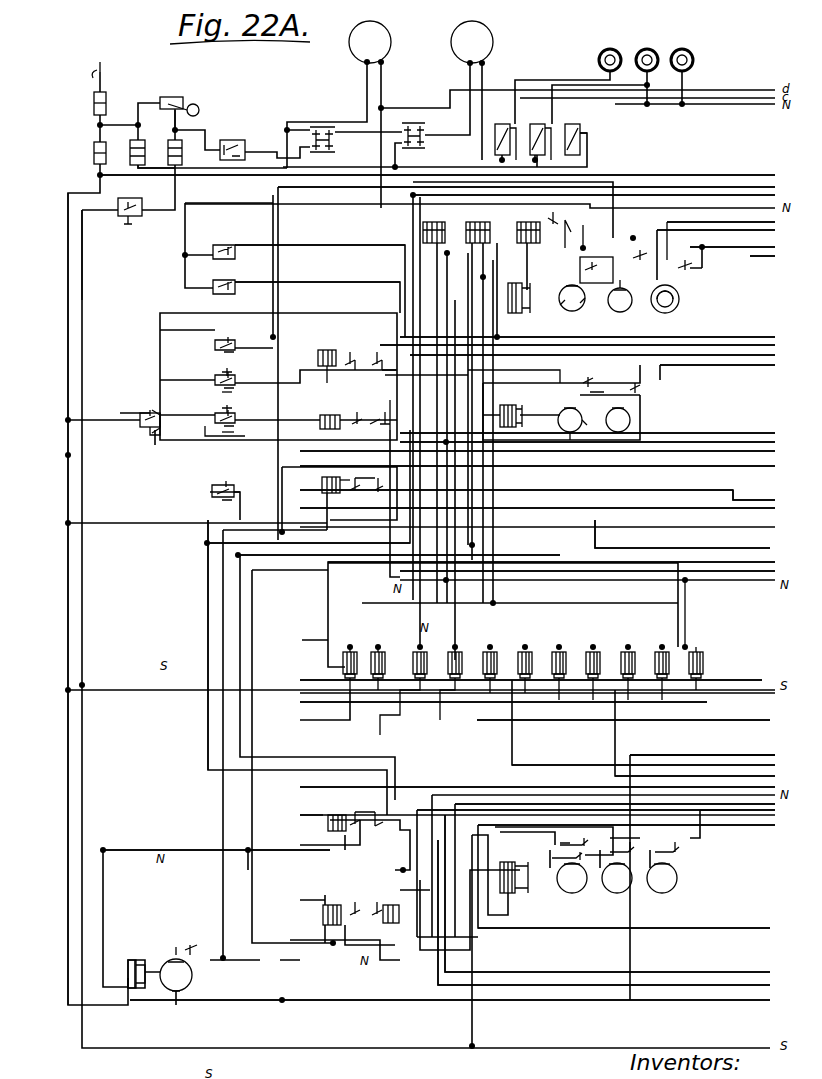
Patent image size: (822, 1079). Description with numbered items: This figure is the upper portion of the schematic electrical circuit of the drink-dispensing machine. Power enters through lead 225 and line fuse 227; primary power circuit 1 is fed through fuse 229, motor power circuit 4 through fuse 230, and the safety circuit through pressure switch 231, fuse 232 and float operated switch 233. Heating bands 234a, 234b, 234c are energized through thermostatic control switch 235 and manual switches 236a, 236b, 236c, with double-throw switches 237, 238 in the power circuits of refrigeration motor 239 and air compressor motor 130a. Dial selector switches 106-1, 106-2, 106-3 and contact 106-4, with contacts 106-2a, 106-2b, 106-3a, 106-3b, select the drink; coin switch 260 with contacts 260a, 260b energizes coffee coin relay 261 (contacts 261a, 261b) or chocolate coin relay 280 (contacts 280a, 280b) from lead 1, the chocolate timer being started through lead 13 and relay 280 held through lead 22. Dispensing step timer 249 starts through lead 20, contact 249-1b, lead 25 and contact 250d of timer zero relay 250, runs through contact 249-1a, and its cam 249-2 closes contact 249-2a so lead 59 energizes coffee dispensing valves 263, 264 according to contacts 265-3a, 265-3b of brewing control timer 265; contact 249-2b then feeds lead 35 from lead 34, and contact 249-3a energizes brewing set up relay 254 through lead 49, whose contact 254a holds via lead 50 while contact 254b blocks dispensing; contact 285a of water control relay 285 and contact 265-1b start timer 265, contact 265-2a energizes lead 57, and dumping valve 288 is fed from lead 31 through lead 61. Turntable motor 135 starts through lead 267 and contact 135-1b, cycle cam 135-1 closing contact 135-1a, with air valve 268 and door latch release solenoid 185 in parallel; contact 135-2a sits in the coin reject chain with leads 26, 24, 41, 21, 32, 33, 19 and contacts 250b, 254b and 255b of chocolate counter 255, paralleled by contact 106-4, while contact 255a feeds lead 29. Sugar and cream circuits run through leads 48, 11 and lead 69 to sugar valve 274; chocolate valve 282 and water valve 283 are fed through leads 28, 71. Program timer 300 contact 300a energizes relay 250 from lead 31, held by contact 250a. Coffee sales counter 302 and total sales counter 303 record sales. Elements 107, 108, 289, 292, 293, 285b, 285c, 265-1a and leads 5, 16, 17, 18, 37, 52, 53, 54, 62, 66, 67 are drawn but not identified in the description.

The lead 225 is at (77, 68).
The line fuse 227 is at (94, 103).
The fuse 229 is at (94, 152).
The fuse 230 is at (148, 145).
The pressure switch 231 is at (129, 224).
The fuse 232 is at (188, 152).
The float operated switch 233 is at (178, 97).
The thermostatic control switch 235 is at (232, 140).
The double-throw switch 237 is at (318, 125).
The double-throw switch 238 is at (423, 128).
The refrigeration motor 239 is at (384, 32).
The air compressor motor 130a is at (487, 32).
The heating band 234a is at (610, 49).
The heating band 234b is at (647, 49).
The heating band 234c is at (687, 53).
The manual switch 236a is at (502, 124).
The manual switch 236b is at (537, 124).
The manual switch 236c is at (574, 126).
The switch contact 108 is at (214, 245).
The switch contact 107 is at (213, 278).
The conductor 16 is at (185, 268).
The conductor 17 is at (516, 290).
The conductor 18 is at (516, 311).
The conductor 5 is at (85, 250).
The primary power circuit 1 is at (68, 772).
The lead 21 is at (665, 380).
The coffee sales counter 302 is at (434, 225).
The total sales counter 303 is at (478, 225).
The chocolate syrup counter 255 is at (528, 225).
The contact 255a is at (550, 220).
The normally closed contact 255b is at (587, 234).
The lead 19 is at (268, 566).
The contact 249-1a is at (607, 262).
The contact 249-2a is at (650, 257).
The contact 249-3a is at (686, 288).
The dispensing step timer 249 is at (521, 312).
The contact 249-1b is at (579, 309).
The cam 249-2 is at (620, 312).
The contact 249-2b is at (671, 308).
The lead 29 is at (762, 215).
The lead 35 is at (732, 237).
The lead 34 is at (727, 231).
The lead 59 is at (626, 523).
The lead 49 is at (598, 414).
The lead 20 is at (598, 333).
The lead 41 is at (728, 367).
The coffee coin relay 261 is at (314, 354).
The contact 261a is at (348, 352).
The contact 261b is at (375, 352).
The selector switch 106-1 is at (243, 347).
The contact 106-2a is at (220, 368).
The selector switch 106-2 is at (243, 381).
The contact 106-2b is at (221, 396).
The contact 106-3a is at (206, 407).
The selector switch 106-3 is at (238, 423).
The contact 106-3b is at (222, 440).
The coin switch 260 is at (140, 416).
The contact 260a is at (154, 410).
The contact 260b is at (157, 432).
The chocolate coin relay 280 is at (317, 422).
The contact 280a is at (371, 426).
The contact 280b is at (373, 418).
The lead 13 is at (593, 447).
The lead 25 is at (375, 372).
The contact 135-1a is at (568, 384).
The turntable motor 135 is at (522, 410).
The cycle cam 135-1 is at (557, 424).
The contact 135-1b is at (570, 431).
The contact 135-2a is at (630, 410).
The lead 28 is at (548, 565).
The lead 11 is at (598, 440).
The lead 48 is at (548, 451).
The lead 24 is at (548, 465).
The lead 22 is at (548, 487).
The lead 26 is at (548, 511).
The contact 106-4 is at (223, 486).
The timer zero relay 250 is at (315, 491).
The contact 250a is at (322, 480).
The contact 250b is at (363, 489).
The contact 250d is at (366, 499).
The lead 33 is at (334, 544).
The door latch release solenoid 185 is at (386, 644).
The sugar valve 274 is at (343, 677).
The coffee dispensing valve 263 is at (404, 697).
The coffee dispensing valve 264 is at (460, 705).
The dumping valve 288 is at (492, 650).
The solenoid 289 is at (525, 650).
The water valve 283 is at (559, 651).
The chocolate valve 282 is at (595, 650).
The solenoid 292 is at (629, 649).
The solenoid 293 is at (660, 650).
The air valve 268 is at (706, 658).
The lead 267 is at (682, 534).
The lead 69 is at (562, 557).
The lead 71 is at (543, 677).
The lead 61 is at (637, 718).
The lead 57 is at (750, 757).
The conductor 62 is at (713, 753).
The conductor 66 is at (654, 764).
The conductor 67 is at (706, 774).
The conductor 54 is at (548, 784).
The conductor 37 is at (607, 813).
The conductor 53 is at (594, 851).
The lead 50 is at (728, 827).
The conductor 52 is at (637, 927).
The lead 32 is at (617, 916).
The lead 31 is at (463, 1000).
The brewing set up relay 254 is at (328, 826).
The contact 254a is at (358, 811).
The contact 254b is at (382, 837).
The water control relay 285 is at (323, 913).
The contact 285a is at (350, 899).
The relay contact 285b is at (387, 899).
The relay coil 285c is at (399, 909).
The program timer 300 is at (139, 960).
The contact 300a is at (188, 944).
The brewing control timer 265 is at (514, 869).
The selector contact 265-1a is at (560, 842).
The contact 265-1b is at (559, 880).
The contact 265-2a is at (624, 873).
The contact 265-3a is at (700, 838).
The contact 265-3b is at (682, 866).
The motor power circuit 4 is at (156, 160).